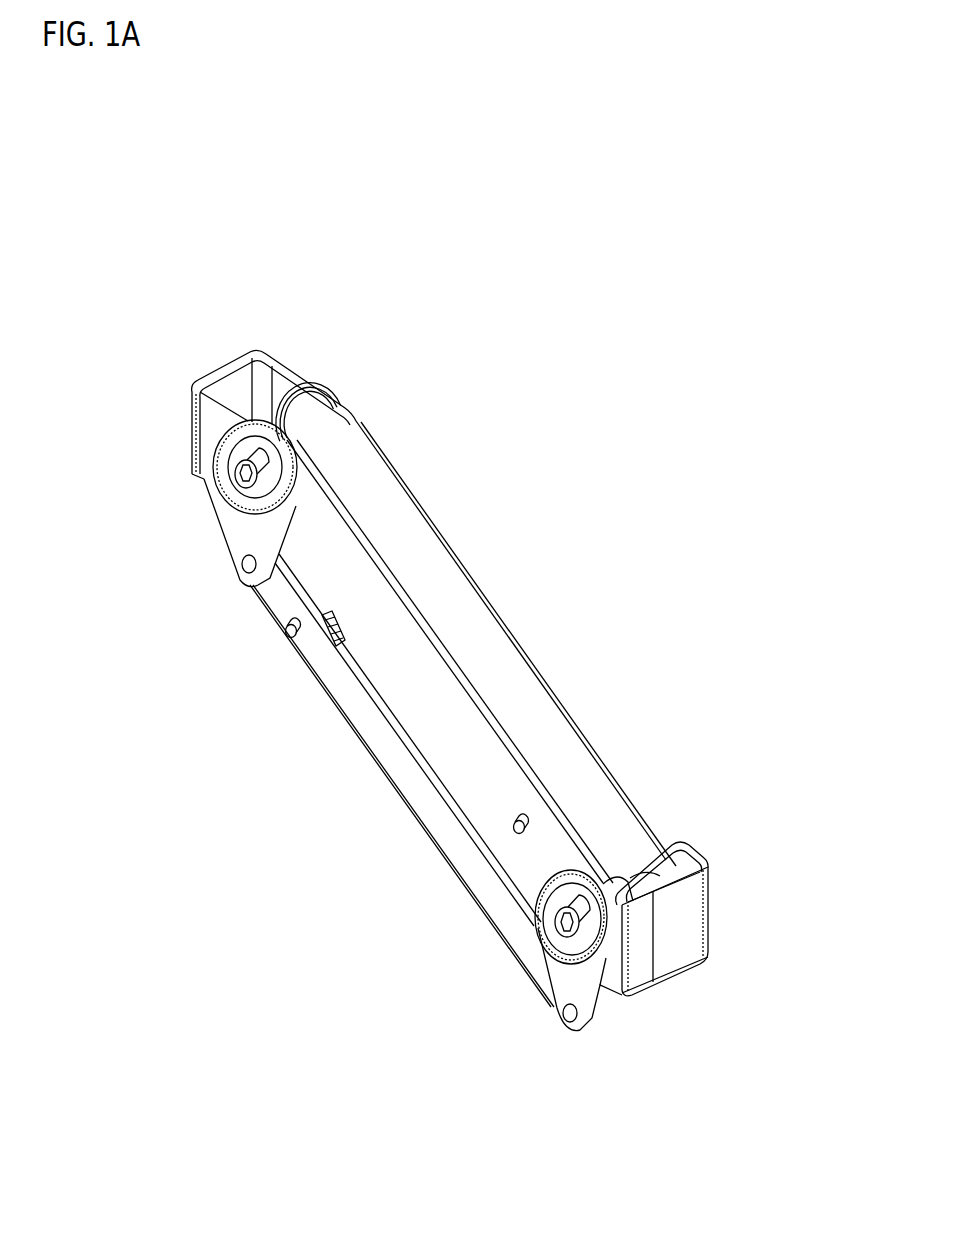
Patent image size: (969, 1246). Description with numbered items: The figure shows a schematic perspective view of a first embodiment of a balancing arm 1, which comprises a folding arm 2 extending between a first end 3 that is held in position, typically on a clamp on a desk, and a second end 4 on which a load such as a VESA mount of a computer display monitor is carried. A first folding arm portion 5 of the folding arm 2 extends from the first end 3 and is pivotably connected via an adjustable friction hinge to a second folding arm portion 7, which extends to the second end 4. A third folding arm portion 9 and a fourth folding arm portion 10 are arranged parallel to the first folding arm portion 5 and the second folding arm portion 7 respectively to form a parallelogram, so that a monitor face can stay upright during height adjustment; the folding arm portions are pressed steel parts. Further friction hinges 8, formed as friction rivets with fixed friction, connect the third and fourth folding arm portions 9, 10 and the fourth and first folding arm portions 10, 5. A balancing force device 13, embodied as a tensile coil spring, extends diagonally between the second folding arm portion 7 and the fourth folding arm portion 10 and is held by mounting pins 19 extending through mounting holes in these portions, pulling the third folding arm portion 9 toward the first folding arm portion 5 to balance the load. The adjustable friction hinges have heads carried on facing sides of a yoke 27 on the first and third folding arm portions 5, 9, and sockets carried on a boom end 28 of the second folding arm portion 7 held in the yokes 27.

The balancing arm 1 is at (656, 372).
The folding arm 2 is at (686, 744).
The first end 3 is at (702, 967).
The second end 4 is at (139, 422).
The first folding arm portion 5 is at (563, 970).
The second folding arm portion 7 is at (496, 670).
The further friction hinge 8 is at (243, 570).
The third folding arm portion 9 is at (253, 536).
The fourth folding arm portion 10 is at (373, 725).
The balancing force device 13 is at (327, 637).
The mounting pin 19 is at (290, 632).
The yoke 27 is at (238, 390).
The boom end 28 is at (326, 431).